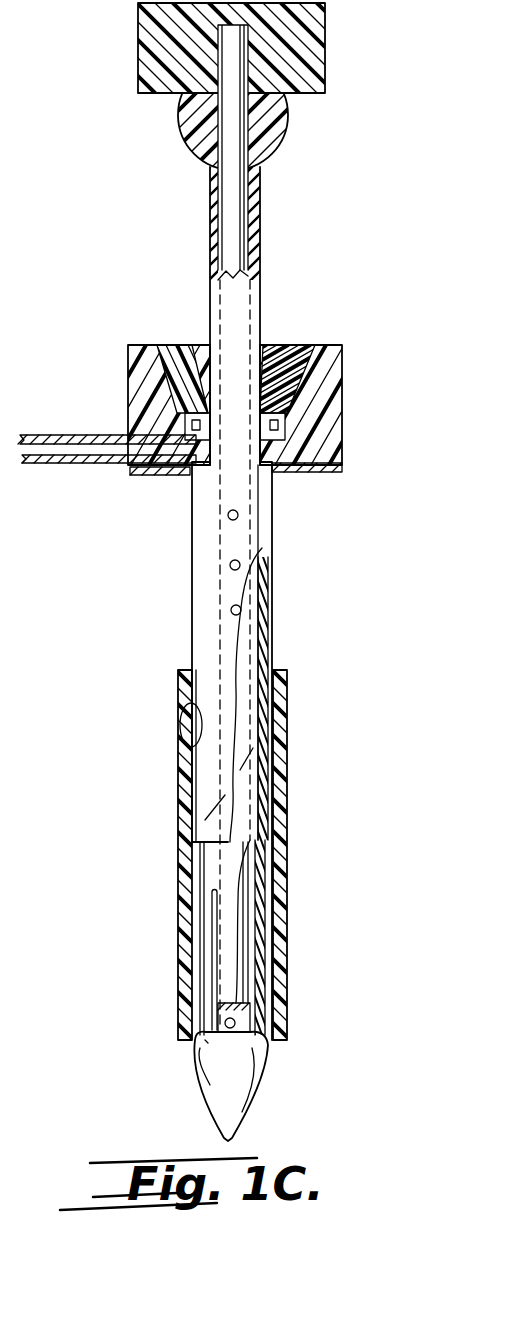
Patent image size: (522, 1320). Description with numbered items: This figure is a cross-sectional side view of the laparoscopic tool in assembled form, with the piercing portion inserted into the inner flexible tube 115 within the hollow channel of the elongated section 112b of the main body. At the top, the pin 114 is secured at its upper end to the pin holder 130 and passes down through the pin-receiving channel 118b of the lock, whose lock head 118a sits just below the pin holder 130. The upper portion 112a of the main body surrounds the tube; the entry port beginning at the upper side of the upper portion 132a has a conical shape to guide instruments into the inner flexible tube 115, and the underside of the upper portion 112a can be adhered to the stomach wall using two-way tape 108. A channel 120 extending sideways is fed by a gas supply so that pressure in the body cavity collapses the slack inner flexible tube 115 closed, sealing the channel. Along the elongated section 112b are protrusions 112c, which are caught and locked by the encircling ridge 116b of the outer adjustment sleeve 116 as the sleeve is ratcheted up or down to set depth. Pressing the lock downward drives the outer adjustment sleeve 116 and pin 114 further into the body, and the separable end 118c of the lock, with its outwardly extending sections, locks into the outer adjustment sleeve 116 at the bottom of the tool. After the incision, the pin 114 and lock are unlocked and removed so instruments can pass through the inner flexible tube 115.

The pin holder 130 is at (325, 62).
The lock head 118a is at (291, 135).
The pin 114 is at (238, 213).
The pin-receiving channel 118b is at (260, 252).
The upper side of the upper portion 132a is at (178, 363).
The upper portion 112a is at (342, 362).
The two-way tape 108 is at (342, 468).
The channel 120 is at (70, 463).
The elongated section 112b is at (273, 512).
The protrusions 112c is at (239, 562).
The inner flexible tube 115 is at (270, 632).
The encircling ridge 116b is at (180, 708).
The separable end 118c is at (222, 1007).
The outer adjustment sleeve 116 is at (267, 1042).